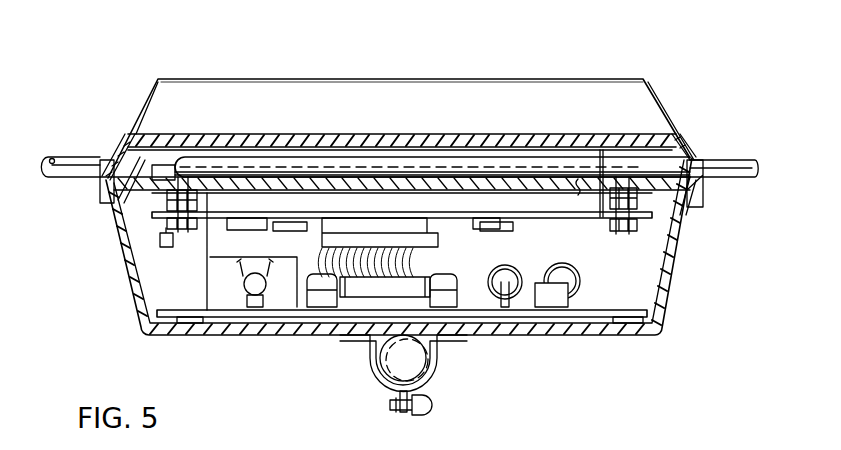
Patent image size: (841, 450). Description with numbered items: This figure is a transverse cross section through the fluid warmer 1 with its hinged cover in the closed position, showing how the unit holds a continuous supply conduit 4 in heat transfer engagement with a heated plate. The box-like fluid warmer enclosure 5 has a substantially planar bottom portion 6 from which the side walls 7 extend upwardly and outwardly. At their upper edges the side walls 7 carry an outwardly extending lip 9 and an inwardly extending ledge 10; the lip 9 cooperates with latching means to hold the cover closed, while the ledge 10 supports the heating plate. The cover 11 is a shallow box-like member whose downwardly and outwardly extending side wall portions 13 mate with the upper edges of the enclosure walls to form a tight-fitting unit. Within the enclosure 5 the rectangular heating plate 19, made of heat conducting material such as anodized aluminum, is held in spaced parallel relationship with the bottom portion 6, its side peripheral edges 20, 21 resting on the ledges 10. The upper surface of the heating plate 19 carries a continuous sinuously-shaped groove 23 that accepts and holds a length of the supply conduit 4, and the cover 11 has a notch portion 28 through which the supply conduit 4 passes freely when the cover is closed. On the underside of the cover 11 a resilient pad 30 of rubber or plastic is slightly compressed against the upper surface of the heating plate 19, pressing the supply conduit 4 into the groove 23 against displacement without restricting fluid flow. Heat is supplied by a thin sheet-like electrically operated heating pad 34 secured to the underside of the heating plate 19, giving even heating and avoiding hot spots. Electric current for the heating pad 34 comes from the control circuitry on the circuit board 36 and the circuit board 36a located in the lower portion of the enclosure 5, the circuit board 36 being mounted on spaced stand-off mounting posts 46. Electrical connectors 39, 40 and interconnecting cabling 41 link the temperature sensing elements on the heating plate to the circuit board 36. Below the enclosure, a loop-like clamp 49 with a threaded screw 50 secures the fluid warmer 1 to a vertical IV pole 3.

The fluid warmer 1 is at (355, 58).
The IV pole 3 is at (425, 357).
The supply conduit 4 is at (70, 176).
The fluid warmer enclosure 5 is at (670, 290).
The bottom portion 6 is at (560, 338).
The side walls 7 is at (120, 237).
The lip 9 is at (140, 167).
The ledge 10 is at (133, 195).
The cover 11 is at (222, 131).
The cover side wall portions 13 is at (117, 147).
The heating plate 19 is at (500, 157).
The side peripheral edge 20 is at (660, 173).
The side peripheral edge 21 is at (100, 193).
The groove 23 is at (320, 150).
The notch portion 28 is at (697, 187).
The resilient pad 30 is at (462, 150).
The heating pad 34 is at (550, 197).
The circuit board 36 is at (534, 310).
The circuit board 36a is at (600, 183).
The electrical connector 39 is at (440, 238).
The electrical connector 40 is at (373, 287).
The interconnecting cabling 41 is at (417, 260).
The stand-off mounting posts 46 is at (188, 322).
The clamp 49 is at (440, 367).
The threaded screw 50 is at (447, 408).